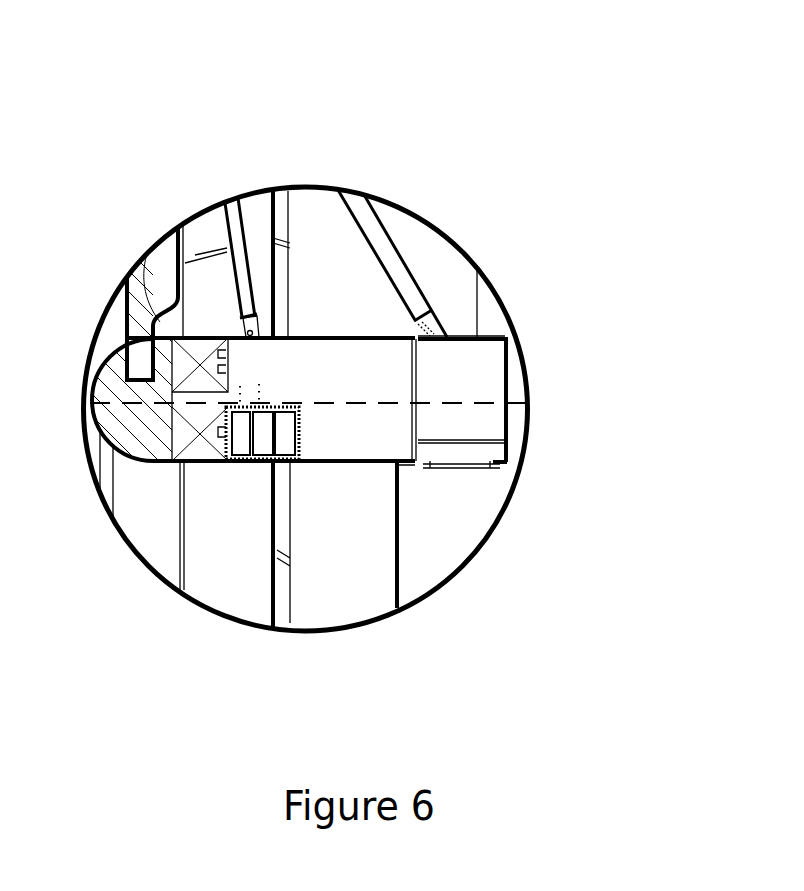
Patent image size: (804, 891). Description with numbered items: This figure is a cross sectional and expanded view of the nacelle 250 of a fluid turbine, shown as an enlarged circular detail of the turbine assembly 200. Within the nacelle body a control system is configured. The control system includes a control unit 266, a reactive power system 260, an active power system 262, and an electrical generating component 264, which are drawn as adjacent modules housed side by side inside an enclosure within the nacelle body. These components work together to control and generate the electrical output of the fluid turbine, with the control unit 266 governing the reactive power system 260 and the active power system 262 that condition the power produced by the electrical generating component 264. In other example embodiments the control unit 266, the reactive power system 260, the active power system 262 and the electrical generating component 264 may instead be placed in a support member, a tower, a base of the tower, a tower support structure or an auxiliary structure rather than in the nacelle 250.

The beverage dispensing system 200 is at (552, 52).
The nacelle 250 is at (395, 383).
The reactive power system 260 is at (237, 452).
The active power system 262 is at (262, 450).
The electrical generating component 264 is at (283, 450).
The control unit 266 is at (227, 408).